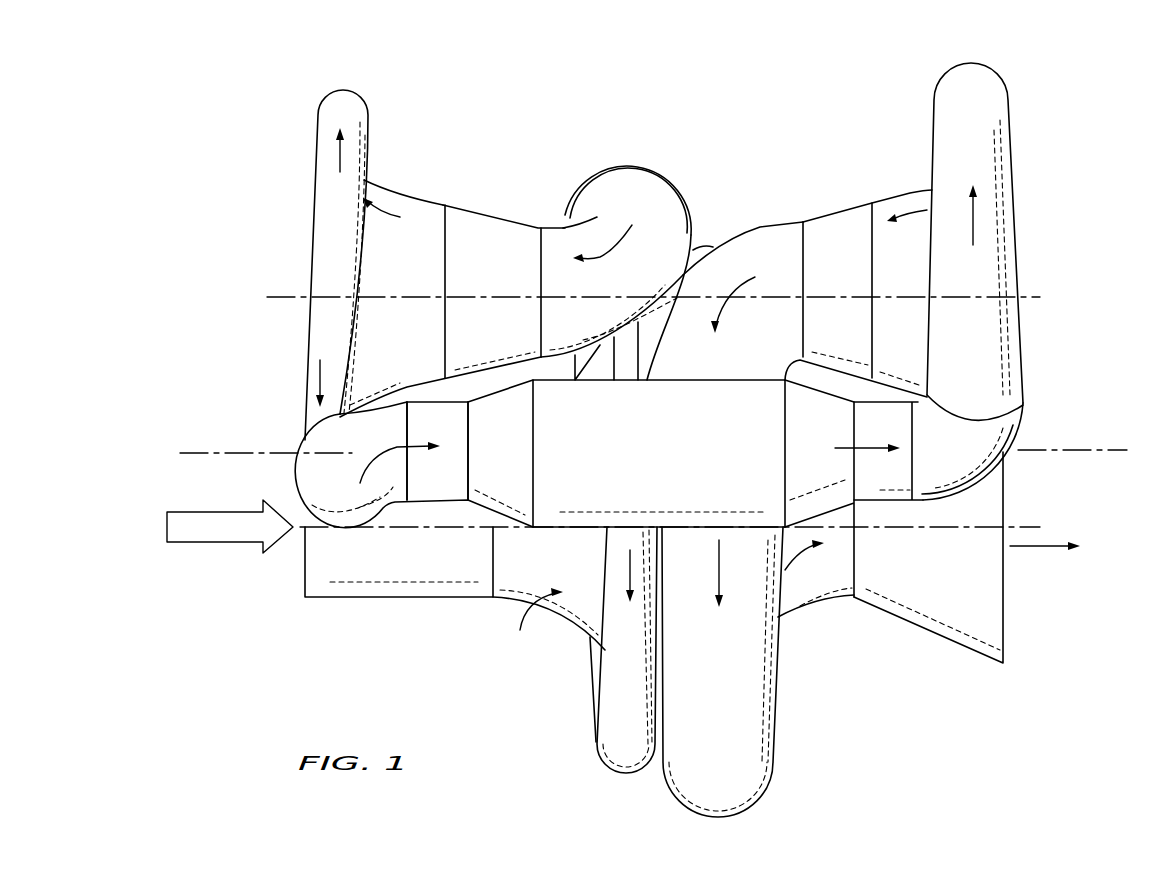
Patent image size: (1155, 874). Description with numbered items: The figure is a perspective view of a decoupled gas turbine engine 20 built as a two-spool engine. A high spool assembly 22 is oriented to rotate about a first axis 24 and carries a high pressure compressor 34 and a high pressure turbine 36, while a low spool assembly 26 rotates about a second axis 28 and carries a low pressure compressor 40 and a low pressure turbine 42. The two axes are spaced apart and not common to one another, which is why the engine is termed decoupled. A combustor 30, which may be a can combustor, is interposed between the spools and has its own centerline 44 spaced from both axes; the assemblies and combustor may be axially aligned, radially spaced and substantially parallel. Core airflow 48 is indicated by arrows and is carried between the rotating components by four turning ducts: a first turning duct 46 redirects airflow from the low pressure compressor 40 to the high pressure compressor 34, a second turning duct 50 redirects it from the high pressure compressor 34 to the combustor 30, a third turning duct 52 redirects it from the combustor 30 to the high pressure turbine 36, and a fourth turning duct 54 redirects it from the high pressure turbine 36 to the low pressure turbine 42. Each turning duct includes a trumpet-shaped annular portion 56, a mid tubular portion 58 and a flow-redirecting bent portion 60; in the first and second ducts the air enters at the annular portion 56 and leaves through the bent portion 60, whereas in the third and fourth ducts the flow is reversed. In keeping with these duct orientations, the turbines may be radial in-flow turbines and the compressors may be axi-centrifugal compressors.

The decoupled gas turbine engine 20 is at (760, 112).
The high spool assembly 22 is at (518, 212).
The first axis 24 is at (283, 290).
The low spool assembly 26 is at (430, 612).
The second axis 28 is at (1027, 527).
The combustor 30 is at (622, 457).
The high pressure compressor 34 is at (470, 207).
The high pressure turbine 36 is at (840, 207).
The low pressure compressor 40 is at (392, 600).
The low pressure turbine 42 is at (900, 612).
The centerline 44 is at (1110, 447).
The first turning duct 46 is at (682, 208).
The core airflow 48 is at (207, 545).
The second turning duct 50 is at (368, 120).
The third turning duct 52 is at (1010, 135).
The fourth turning duct 54 is at (745, 226).
The annular portion 56 is at (389, 196).
The tubular portion 58 is at (330, 88).
The bent portion 60 is at (693, 214).